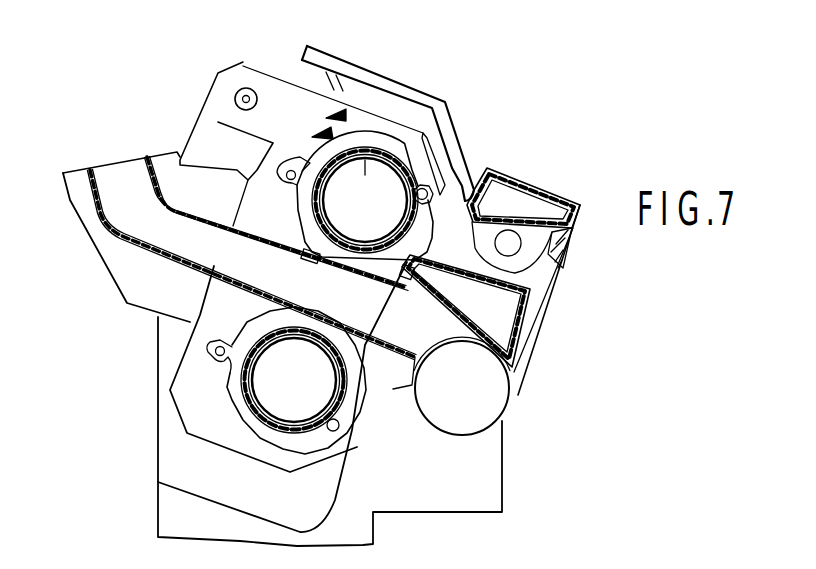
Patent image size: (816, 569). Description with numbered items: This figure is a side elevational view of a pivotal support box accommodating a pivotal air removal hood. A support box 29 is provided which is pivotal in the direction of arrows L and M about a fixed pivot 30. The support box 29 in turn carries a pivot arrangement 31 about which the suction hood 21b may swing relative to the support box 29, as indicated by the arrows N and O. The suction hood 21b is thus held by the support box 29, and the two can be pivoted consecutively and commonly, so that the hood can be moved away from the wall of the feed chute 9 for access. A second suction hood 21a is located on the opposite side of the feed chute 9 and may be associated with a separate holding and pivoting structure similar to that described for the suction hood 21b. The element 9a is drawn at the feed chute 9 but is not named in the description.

The feed chute 9 is at (128, 200).
The path opening 9a is at (203, 225).
The support box 29 is at (248, 78).
The fixed pivot 30 is at (234, 100).
The suction hood 21a is at (302, 407).
The suction hood 21b is at (366, 172).
The pivot arrangement 31 is at (430, 190).